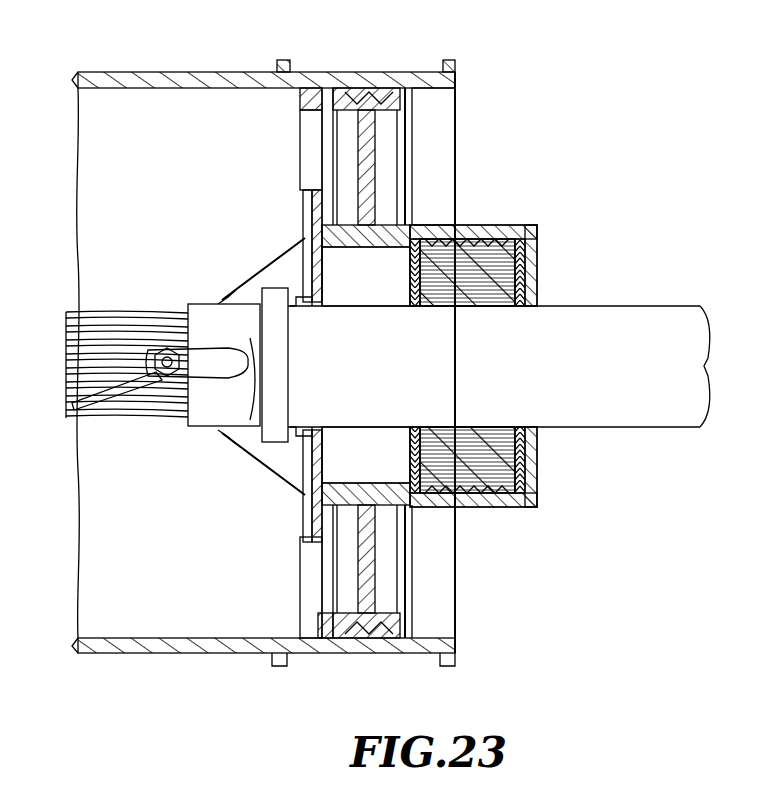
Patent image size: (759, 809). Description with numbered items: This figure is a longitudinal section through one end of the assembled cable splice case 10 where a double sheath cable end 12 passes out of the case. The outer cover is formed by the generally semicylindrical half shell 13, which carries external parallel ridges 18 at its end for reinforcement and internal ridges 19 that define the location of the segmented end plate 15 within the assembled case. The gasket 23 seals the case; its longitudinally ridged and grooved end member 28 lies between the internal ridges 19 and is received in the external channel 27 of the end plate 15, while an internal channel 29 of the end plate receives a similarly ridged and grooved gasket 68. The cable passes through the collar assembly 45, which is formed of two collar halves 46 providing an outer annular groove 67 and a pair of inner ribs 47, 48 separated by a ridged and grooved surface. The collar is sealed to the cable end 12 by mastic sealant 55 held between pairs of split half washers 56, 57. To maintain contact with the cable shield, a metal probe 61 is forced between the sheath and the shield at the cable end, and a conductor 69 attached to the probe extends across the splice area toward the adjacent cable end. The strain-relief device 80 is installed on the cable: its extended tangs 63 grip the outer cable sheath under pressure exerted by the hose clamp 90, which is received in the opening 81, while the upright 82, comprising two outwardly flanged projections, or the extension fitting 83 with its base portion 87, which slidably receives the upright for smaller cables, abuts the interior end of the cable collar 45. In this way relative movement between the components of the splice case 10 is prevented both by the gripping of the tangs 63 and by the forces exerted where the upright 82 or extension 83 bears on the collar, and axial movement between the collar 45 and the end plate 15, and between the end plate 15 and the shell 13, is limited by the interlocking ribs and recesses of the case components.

The cable splice case 10 is at (162, 72).
The double sheath cable end 12 is at (648, 318).
The half shell 13 is at (208, 72).
The end plate 15 is at (378, 162).
The external parallel ridge 18 is at (284, 60).
The internal ridge 19 is at (408, 110).
The gasket 23 is at (382, 80).
The external channel 27 is at (353, 645).
The end member 28 is at (372, 645).
The internal channel 29 is at (322, 543).
The collar assembly 45 is at (532, 225).
The collar half 46 is at (524, 504).
The inner rib 47 is at (400, 490).
The inner rib 48 is at (538, 478).
The mastic sealant 55 is at (488, 252).
The split half washer 56 is at (410, 262).
The split half washer 57 is at (522, 272).
The metal probe 61 is at (206, 356).
The tang 63 is at (240, 365).
The outer annular groove 67 is at (358, 247).
The gasket 68 is at (368, 492).
The conductor 69 is at (70, 394).
The strain-relief device 80 is at (264, 266).
The opening 81 is at (260, 300).
The upright 82 is at (312, 238).
The extension fitting 83 is at (316, 186).
The base portion 87 is at (306, 300).
The hose clamp 90 is at (290, 368).